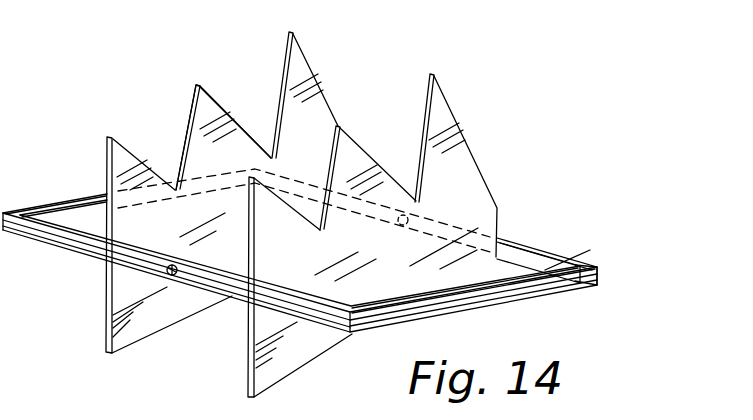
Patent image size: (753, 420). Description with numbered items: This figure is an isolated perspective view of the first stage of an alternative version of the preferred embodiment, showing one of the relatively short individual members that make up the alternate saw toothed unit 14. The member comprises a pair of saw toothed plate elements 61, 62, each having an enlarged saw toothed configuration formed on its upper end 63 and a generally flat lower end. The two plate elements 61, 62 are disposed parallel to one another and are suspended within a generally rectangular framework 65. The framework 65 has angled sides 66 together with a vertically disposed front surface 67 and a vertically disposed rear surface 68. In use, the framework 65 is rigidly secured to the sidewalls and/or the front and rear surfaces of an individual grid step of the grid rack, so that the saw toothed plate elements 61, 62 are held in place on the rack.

The alternate saw toothed unit 14 is at (332, 208).
The saw toothed plate element 61 is at (222, 186).
The saw toothed plate element 62 is at (310, 265).
The upper end 63 is at (195, 85).
The framework 65 is at (332, 240).
The angled sides 66 is at (80, 202).
The front surface 67 is at (578, 268).
The rear surface 68 is at (240, 289).